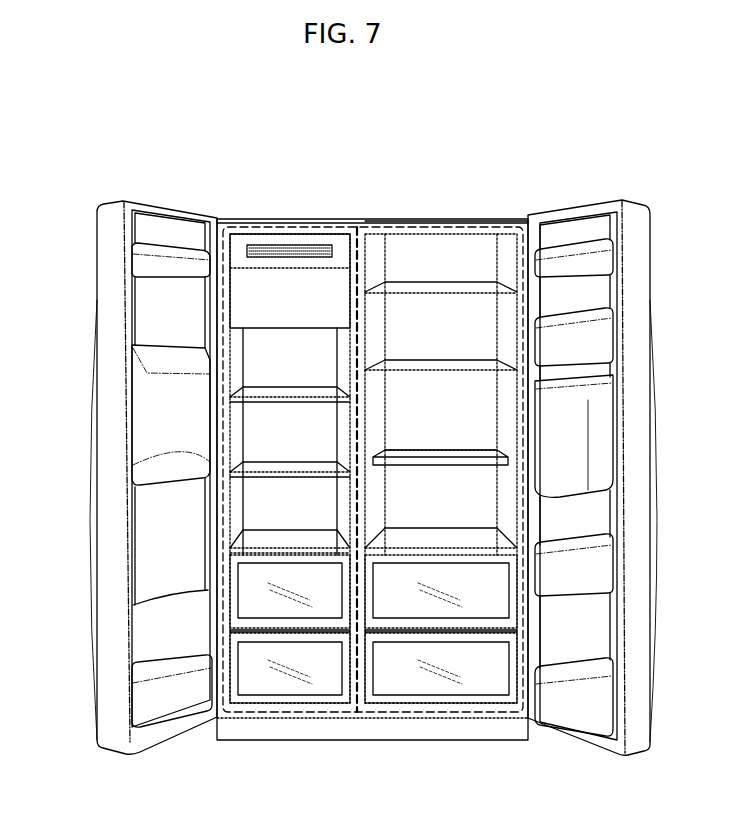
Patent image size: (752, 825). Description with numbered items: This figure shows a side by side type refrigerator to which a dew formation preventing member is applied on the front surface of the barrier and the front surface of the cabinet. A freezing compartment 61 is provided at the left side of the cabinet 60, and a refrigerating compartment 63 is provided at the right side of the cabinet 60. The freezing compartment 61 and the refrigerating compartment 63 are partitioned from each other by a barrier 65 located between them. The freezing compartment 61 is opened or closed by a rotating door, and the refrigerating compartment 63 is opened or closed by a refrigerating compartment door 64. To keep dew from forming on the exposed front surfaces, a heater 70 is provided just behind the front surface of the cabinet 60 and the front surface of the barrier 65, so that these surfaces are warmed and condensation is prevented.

The cabinet 60 is at (294, 212).
The freezing compartment 61 is at (270, 428).
The refrigerating compartment 63 is at (448, 413).
The refrigerating compartment door 64 is at (640, 251).
The barrier 65 is at (367, 258).
The heater 70 is at (457, 222).